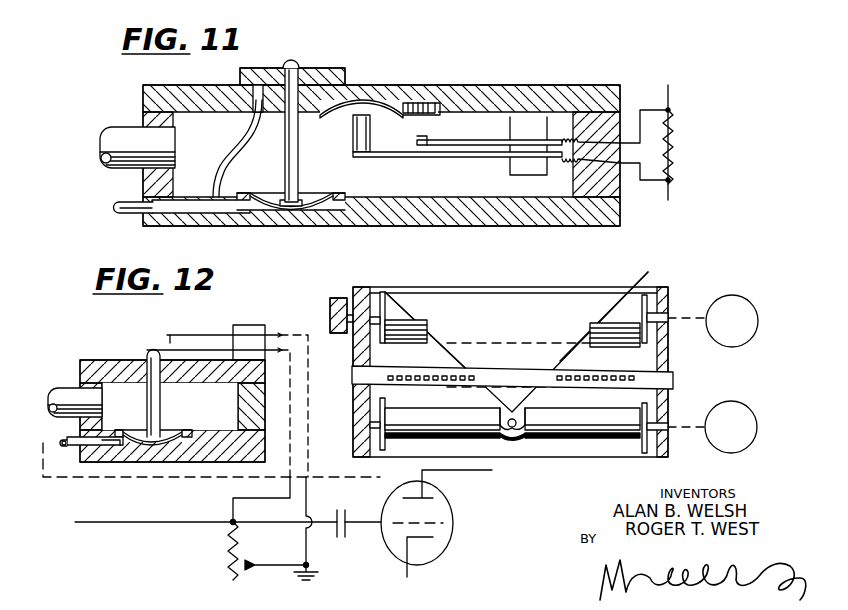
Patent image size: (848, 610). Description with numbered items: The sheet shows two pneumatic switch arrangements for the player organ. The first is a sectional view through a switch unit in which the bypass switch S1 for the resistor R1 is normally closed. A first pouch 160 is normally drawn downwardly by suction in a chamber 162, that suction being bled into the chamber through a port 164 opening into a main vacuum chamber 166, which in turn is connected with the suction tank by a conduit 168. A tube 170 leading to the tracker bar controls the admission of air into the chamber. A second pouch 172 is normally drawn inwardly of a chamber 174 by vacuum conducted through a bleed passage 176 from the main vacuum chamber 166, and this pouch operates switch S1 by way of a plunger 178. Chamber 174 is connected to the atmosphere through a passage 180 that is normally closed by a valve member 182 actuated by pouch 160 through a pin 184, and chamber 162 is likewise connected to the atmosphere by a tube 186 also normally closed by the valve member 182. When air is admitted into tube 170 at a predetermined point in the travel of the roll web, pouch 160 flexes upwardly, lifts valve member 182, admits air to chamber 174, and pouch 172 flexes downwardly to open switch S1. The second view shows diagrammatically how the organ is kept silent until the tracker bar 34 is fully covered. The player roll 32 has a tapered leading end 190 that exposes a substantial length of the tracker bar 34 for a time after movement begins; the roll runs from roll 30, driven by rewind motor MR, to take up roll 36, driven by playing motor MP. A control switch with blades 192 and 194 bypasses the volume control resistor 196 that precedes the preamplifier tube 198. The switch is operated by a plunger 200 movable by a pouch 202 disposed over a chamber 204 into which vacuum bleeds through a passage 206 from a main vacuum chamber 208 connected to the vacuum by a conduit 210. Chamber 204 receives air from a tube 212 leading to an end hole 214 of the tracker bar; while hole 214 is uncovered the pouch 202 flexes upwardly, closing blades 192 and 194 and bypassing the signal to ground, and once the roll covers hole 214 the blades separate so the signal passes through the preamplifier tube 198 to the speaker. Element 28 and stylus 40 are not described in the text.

In FIG. 11, the first pouch 160 is at (320, 224).
In FIG. 11, the chamber 162 is at (260, 208).
In FIG. 11, the port 164 is at (222, 193).
In FIG. 11, the main vacuum chamber 166 is at (340, 182).
In FIG. 11, the conduit 168 is at (133, 137).
In FIG. 11, the tube 170 is at (123, 215).
In FIG. 11, the second pouch 172 is at (387, 108).
In FIG. 11, the chamber 174 is at (331, 108).
In FIG. 11, the bleed passage 176 is at (435, 102).
In FIG. 11, the plunger 178 is at (370, 132).
In FIG. 11, the passage 180 is at (327, 97).
In FIG. 11, the valve member 182 is at (270, 68).
In FIG. 11, the pin 184 is at (298, 132).
In FIG. 11, the tube 186 is at (232, 143).
In FIG. 11, the bypass switch S1 is at (435, 148).
In FIG. 11, the resistor R1 is at (668, 140).
In FIG. 12, the tapered leading end 190 is at (580, 357).
In FIG. 12, the switch blade 192 is at (190, 333).
In FIG. 12, the switch blade 194 is at (210, 345).
In FIG. 12, the volume control resistor 196 is at (233, 547).
In FIG. 12, the preamplifier tube 198 is at (447, 501).
In FIG. 12, the plunger 200 is at (148, 355).
In FIG. 12, the pouch 202 is at (175, 432).
In FIG. 12, the chamber 204 is at (178, 440).
In FIG. 12, the passage 206 is at (113, 442).
In FIG. 12, the main vacuum chamber 208 is at (110, 430).
In FIG. 12, the conduit 210 is at (70, 395).
In FIG. 12, the tube 212 is at (66, 436).
In FIG. 12, the end hole 214 is at (380, 477).
In FIG. 12, the pin 28 is at (650, 310).
In FIG. 12, the roll 30 is at (668, 312).
In FIG. 12, the player roll 32 is at (499, 350).
In FIG. 12, the tracker bar 34 is at (532, 374).
In FIG. 12, the take up roll 36 is at (646, 440).
In FIG. 12, the stylus 40 is at (517, 437).
In FIG. 12, the rewind motor MR is at (732, 321).
In FIG. 12, the playing motor MP is at (731, 427).